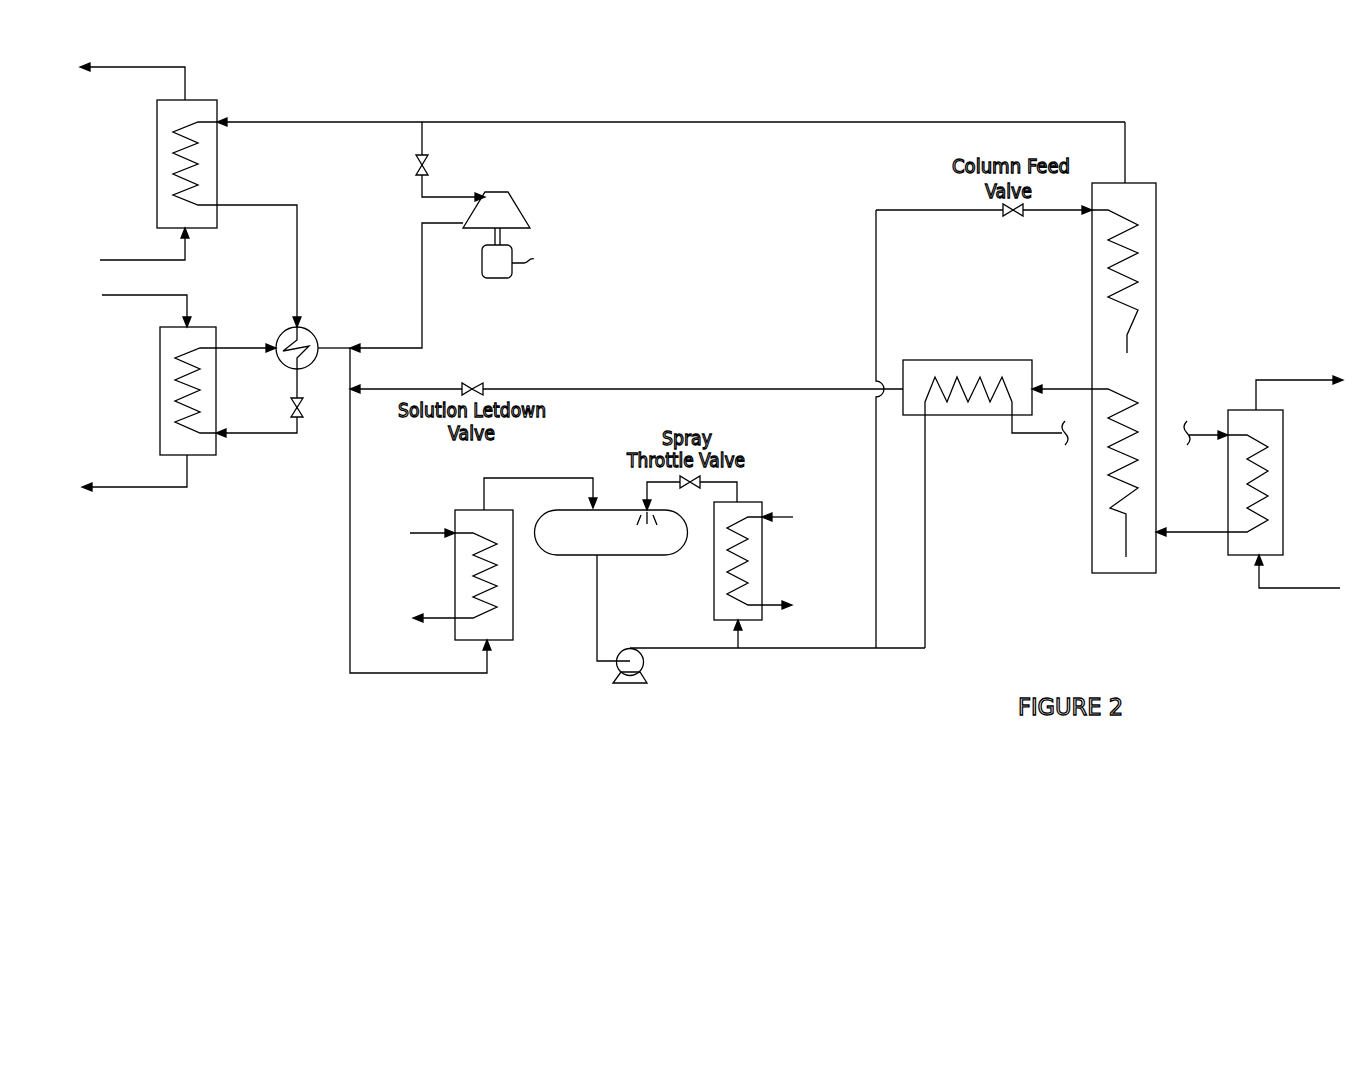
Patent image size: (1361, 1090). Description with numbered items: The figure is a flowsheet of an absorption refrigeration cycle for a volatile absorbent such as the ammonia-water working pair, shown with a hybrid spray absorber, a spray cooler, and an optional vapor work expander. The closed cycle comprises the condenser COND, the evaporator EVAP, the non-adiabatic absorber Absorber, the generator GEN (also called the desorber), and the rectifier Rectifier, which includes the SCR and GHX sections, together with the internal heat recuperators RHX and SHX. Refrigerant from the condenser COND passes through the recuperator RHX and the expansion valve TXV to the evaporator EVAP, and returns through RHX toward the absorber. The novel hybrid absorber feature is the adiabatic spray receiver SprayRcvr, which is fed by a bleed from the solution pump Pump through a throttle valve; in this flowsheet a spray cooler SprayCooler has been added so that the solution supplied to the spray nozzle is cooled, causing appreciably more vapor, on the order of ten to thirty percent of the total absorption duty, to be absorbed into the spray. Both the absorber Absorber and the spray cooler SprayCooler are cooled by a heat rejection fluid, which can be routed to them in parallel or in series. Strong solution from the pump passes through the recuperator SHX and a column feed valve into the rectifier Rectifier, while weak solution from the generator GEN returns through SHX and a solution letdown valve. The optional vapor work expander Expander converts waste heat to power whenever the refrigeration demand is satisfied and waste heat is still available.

The condenser COND is at (601, 195).
The evaporator EVAP is at (179, 393).
The internal heat recuperator RHX is at (318, 342).
The thermostatic expansion valve TXV is at (279, 403).
The vapor work expander Expander is at (490, 237).
The non-adiabatic absorber Absorber is at (482, 559).
The adiabatic spray receiver SprayRcvr is at (611, 585).
The solution pump Pump is at (761, 694).
The spray cooler SprayCooler is at (786, 554).
The internal heat recuperator SHX is at (997, 492).
The rectifier Rectifier is at (1123, 364).
The SCR section of the rectifier SCR is at (1147, 281).
The GHX section of the rectifier GHX is at (1091, 473).
The generator GEN is at (1256, 482).